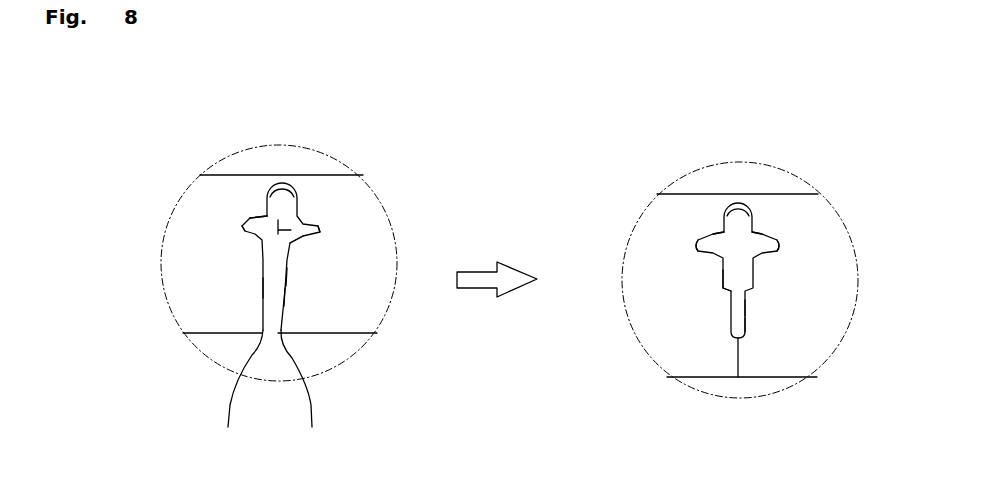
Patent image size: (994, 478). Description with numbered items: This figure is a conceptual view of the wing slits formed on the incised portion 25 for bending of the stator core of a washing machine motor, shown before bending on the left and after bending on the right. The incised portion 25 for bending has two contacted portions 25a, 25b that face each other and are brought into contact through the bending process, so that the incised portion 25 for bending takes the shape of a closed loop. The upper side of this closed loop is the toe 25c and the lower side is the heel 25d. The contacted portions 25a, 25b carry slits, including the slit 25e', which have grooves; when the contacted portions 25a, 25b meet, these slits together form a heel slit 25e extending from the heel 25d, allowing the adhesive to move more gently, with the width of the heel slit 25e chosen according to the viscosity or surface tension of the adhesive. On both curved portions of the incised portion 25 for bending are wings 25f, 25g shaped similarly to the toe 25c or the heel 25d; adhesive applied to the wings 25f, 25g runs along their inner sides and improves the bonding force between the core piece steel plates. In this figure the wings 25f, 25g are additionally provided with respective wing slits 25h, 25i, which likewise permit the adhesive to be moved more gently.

The incised portion for bending 25 is at (320, 226).
The contacted portion 25a is at (237, 388).
The contacted portion 25b is at (302, 388).
The toe 25c is at (281, 181).
The heel 25d is at (724, 289).
The heel slit 25e is at (588, 354).
The slit 25e' is at (209, 339).
The wing 25f is at (262, 218).
The wing 25g is at (303, 237).
The wing slit 25h is at (243, 226).
The wing slit 25i is at (320, 230).